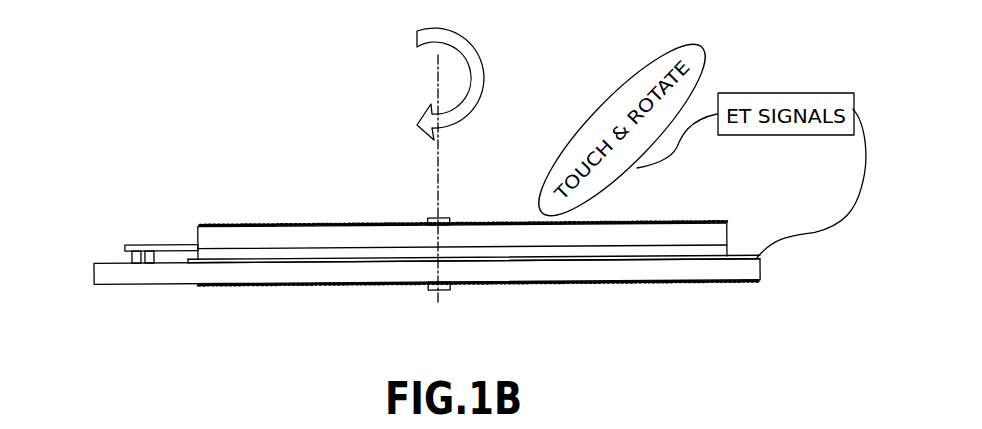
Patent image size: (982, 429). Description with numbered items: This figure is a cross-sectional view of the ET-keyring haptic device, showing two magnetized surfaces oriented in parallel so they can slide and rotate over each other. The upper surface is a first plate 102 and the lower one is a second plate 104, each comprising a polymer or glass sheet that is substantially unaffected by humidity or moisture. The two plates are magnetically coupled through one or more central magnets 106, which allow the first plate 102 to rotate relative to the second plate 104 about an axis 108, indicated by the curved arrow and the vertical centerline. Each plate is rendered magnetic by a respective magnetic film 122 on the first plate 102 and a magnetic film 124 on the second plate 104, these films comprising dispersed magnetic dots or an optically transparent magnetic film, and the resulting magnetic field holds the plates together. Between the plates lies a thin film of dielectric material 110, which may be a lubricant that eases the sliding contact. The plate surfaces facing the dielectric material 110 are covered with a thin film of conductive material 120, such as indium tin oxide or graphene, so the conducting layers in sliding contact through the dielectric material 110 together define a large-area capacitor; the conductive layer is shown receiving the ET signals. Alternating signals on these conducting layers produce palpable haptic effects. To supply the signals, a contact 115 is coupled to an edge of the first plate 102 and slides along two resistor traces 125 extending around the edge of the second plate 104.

The first plate 102 is at (362, 230).
The second plate 104 is at (322, 283).
The central magnets 106 is at (428, 220).
The axis 108 is at (437, 74).
The dielectric material 110 is at (647, 255).
The contact 115 is at (180, 243).
The conductive material 120 is at (713, 245).
The magnetic film 122 is at (488, 225).
The magnetic film 124 is at (527, 283).
The resistor traces 125 is at (102, 253).